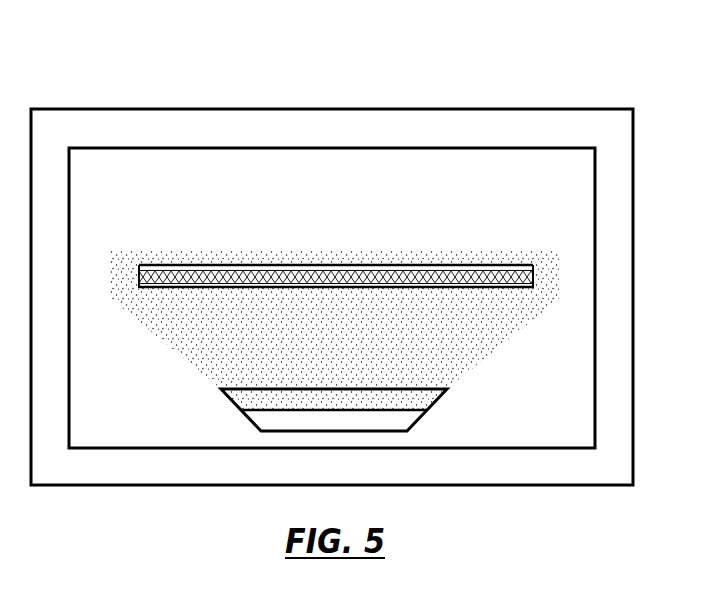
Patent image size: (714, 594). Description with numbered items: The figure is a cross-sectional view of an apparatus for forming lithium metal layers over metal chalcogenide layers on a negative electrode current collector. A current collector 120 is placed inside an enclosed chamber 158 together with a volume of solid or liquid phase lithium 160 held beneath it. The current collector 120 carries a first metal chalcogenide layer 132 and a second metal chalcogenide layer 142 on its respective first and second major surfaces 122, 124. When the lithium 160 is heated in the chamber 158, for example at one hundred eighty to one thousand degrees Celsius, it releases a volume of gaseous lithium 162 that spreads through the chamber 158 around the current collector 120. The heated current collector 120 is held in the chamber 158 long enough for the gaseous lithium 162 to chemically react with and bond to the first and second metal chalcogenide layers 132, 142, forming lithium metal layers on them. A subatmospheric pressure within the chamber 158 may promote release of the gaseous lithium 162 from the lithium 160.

The enclosed chamber 158 is at (151, 108).
The current collector 120 is at (332, 278).
The first major surface 122 is at (290, 266).
The second major surface 124 is at (290, 289).
The first metal chalcogenide layer 132 is at (138, 267).
The second metal chalcogenide layer 142 is at (138, 289).
The solid or liquid phase lithium 160 is at (403, 422).
The gaseous lithium 162 is at (467, 340).